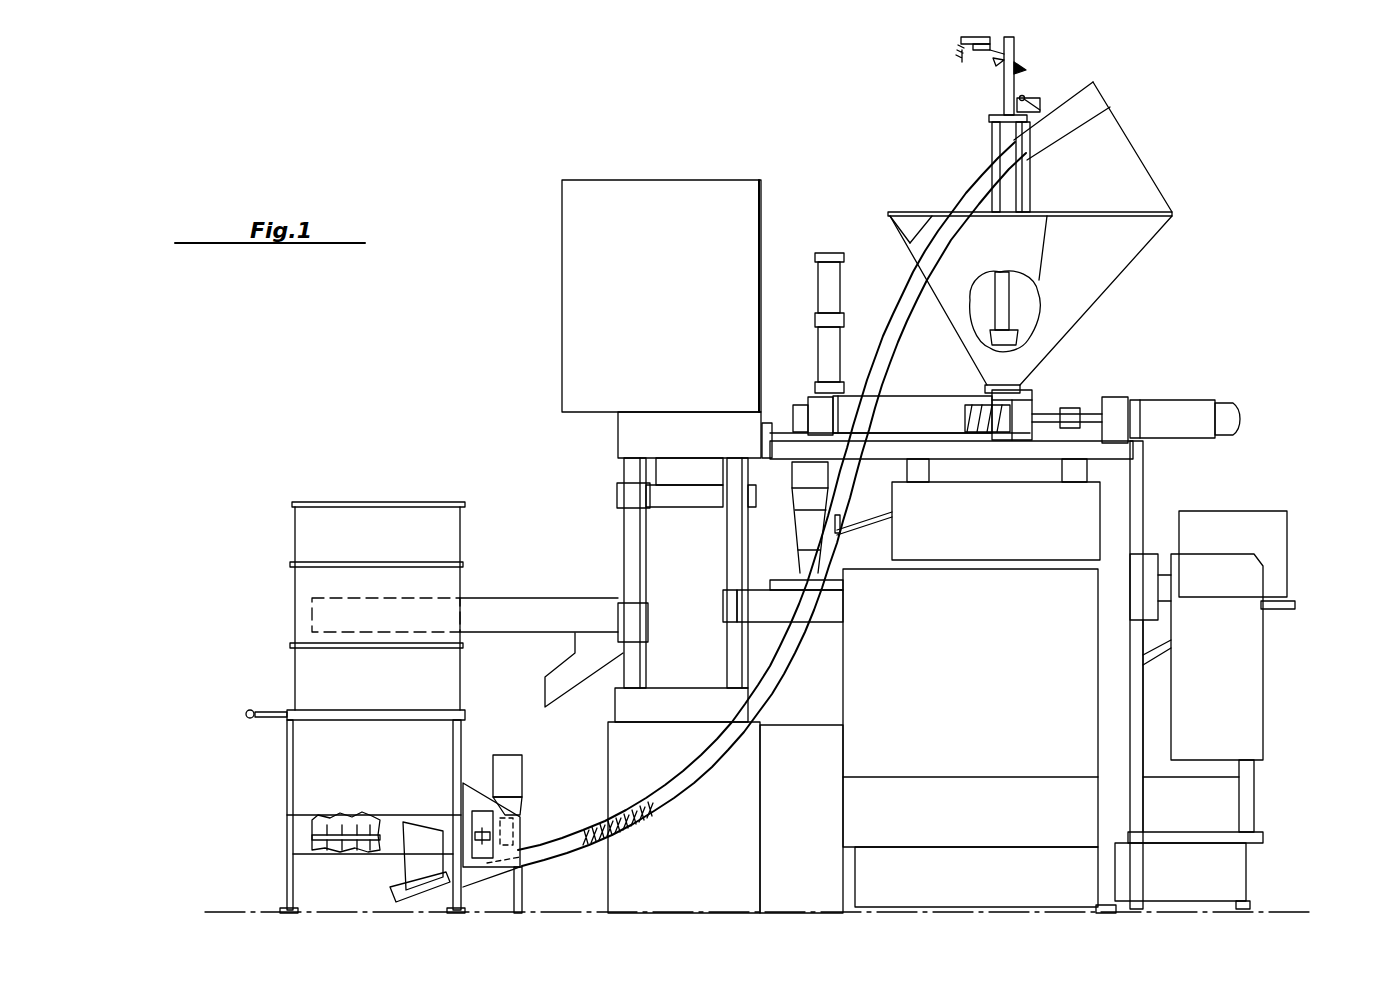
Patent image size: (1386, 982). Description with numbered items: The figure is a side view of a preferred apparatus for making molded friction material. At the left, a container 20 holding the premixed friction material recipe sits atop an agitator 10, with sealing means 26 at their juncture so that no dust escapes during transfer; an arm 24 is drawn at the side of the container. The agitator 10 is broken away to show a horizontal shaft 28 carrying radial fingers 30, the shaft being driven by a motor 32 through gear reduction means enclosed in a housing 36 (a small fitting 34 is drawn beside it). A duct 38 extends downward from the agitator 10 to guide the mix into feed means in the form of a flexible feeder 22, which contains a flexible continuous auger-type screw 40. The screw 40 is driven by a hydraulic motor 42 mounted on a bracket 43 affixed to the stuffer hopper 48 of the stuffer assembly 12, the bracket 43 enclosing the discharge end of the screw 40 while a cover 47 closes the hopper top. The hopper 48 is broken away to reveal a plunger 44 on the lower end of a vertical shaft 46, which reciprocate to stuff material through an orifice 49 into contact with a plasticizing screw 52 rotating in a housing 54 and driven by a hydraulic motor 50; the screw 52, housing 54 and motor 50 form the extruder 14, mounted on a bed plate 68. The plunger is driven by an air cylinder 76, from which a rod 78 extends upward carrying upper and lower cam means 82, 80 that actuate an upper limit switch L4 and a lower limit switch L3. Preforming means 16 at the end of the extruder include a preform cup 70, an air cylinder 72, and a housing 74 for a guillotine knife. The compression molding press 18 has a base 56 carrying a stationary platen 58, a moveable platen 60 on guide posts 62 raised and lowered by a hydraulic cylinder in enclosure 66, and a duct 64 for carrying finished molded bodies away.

The agitator 10 is at (284, 761).
The stuffer assembly 12 is at (1096, 272).
The extruder portion 14 is at (910, 393).
The preforming means 16 is at (808, 395).
The compression molding press 18 is at (556, 253).
The container 20 is at (470, 527).
The feed means (flexible feeder) 22 is at (572, 857).
The arm 24 is at (487, 606).
The sealing means 26 is at (290, 712).
The horizontal shaft 28 is at (335, 820).
The fingers 30 is at (362, 852).
The motor 32 is at (510, 780).
The valve housing 34 is at (482, 830).
The housing 36 is at (520, 835).
The duct 38 is at (420, 845).
The flexible screw 40 is at (630, 825).
The hydraulic motor 42 is at (1095, 103).
The mounting bracket 43 is at (1135, 165).
The plunger 44 is at (1010, 338).
The vertical shaft 46 is at (1005, 310).
The cover 47 is at (927, 212).
The stuffer hopper 48 is at (915, 232).
The orifice 49 is at (1003, 397).
The hydraulic motor 50 is at (1185, 408).
The plasticizing screw 52 is at (990, 428).
The plasticizing screw housing 54 is at (925, 410).
The base 56 is at (745, 852).
The stationary platen 58 is at (625, 703).
The moveable platen 60 is at (657, 495).
The guide posts 62 is at (632, 572).
The duct 64 is at (560, 676).
The hydraulic cylinder enclosure 66 is at (633, 436).
The bed plate 68 is at (1135, 453).
The preform cup 70 is at (818, 420).
The air cylinder 72 is at (825, 280).
The housing 74 is at (835, 355).
The air cylinder 76 is at (1003, 135).
The rod 78 is at (1004, 90).
The lower cam means 80 is at (1016, 66).
The upper cam means 82 is at (993, 60).
The lower limit switch L3 is at (1023, 133).
The upper limit switch L4 is at (962, 42).